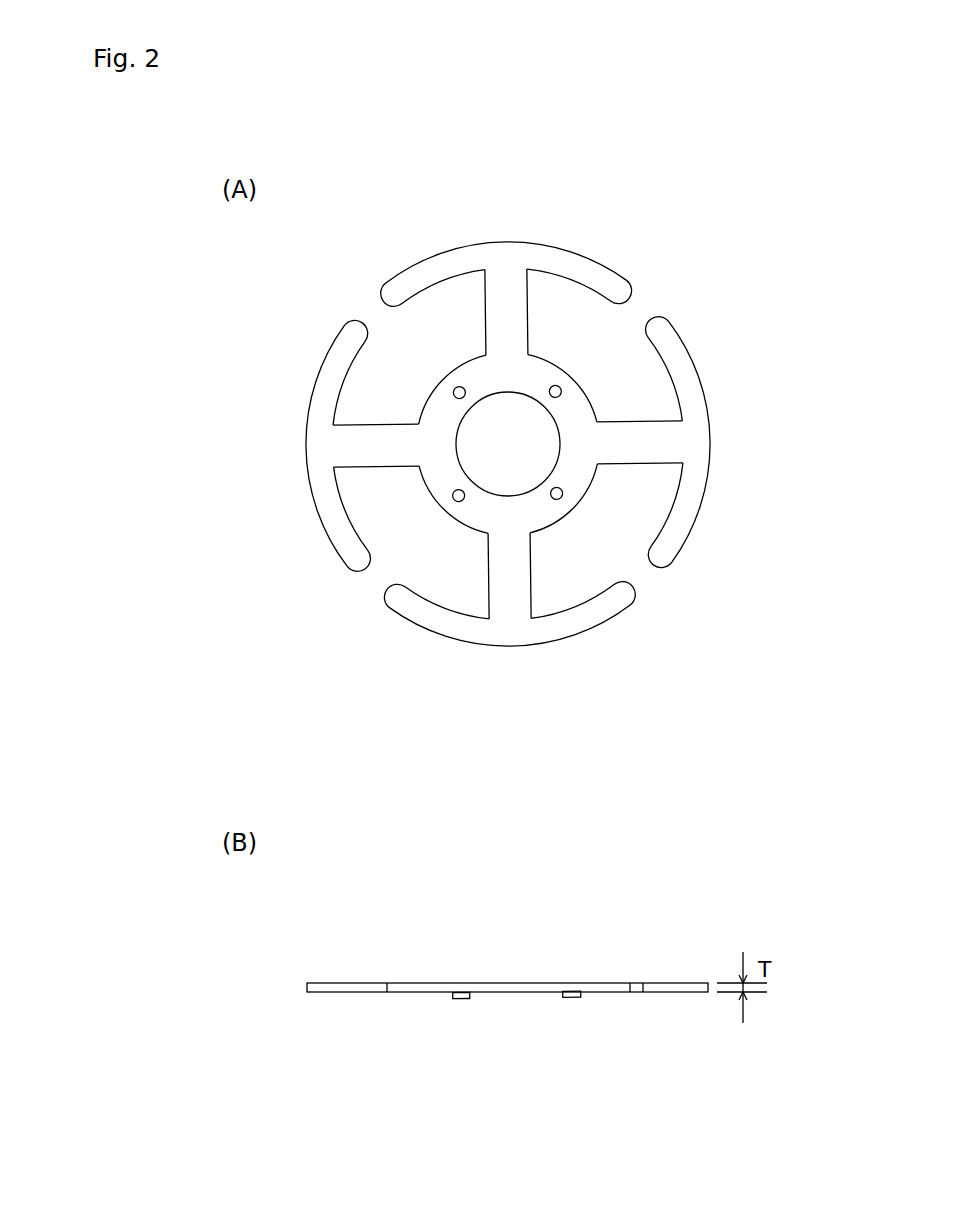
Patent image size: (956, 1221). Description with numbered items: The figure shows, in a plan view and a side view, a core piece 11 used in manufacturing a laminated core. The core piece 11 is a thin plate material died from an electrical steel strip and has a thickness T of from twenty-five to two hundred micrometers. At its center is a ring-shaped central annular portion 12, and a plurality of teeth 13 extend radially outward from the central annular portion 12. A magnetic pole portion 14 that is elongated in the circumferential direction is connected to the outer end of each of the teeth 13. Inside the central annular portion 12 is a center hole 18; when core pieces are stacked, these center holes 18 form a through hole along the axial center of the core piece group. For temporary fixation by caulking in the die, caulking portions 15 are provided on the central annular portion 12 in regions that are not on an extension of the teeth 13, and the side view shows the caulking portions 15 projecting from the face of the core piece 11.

The core piece 11 is at (496, 640).
The central annular portion 12 is at (572, 508).
The teeth 13 is at (493, 302).
The magnetic pole portion 14 is at (542, 262).
The caulking portion 15 is at (455, 387).
The center hole 18 is at (530, 402).